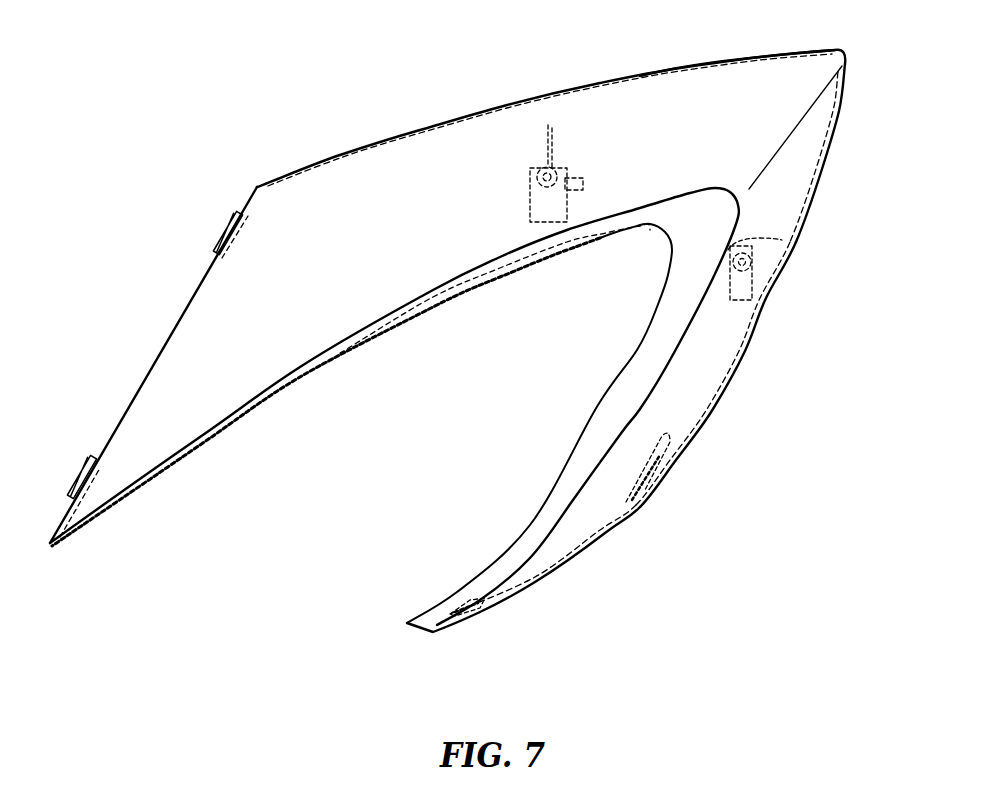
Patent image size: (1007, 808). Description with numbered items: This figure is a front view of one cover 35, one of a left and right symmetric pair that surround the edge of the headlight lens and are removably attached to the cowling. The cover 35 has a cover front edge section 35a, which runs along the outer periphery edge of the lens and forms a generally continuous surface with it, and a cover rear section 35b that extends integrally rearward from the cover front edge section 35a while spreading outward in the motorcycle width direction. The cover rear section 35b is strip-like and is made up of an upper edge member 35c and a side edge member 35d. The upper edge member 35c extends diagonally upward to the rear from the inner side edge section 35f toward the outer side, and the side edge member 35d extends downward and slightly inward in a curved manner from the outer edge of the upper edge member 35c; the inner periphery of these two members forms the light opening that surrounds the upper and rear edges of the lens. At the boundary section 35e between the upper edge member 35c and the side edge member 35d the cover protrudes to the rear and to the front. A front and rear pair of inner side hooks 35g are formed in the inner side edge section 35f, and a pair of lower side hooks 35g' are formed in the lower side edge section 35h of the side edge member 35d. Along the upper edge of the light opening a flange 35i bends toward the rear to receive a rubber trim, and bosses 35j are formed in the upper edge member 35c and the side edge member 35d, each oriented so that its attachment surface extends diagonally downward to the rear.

The cover 35 is at (474, 320).
The cover front edge section 35a is at (387, 330).
The cover rear section 35b is at (686, 66).
The upper edge member 35c is at (500, 120).
The side edge member 35d is at (733, 344).
The boundary section 35e is at (806, 121).
The inner side edge section 35f is at (168, 335).
The inner side hook 35g is at (145, 344).
The lower side hook 35g' is at (575, 524).
The lower side edge section 35h is at (542, 580).
The flange 35i is at (487, 263).
The boss 35j is at (562, 167).